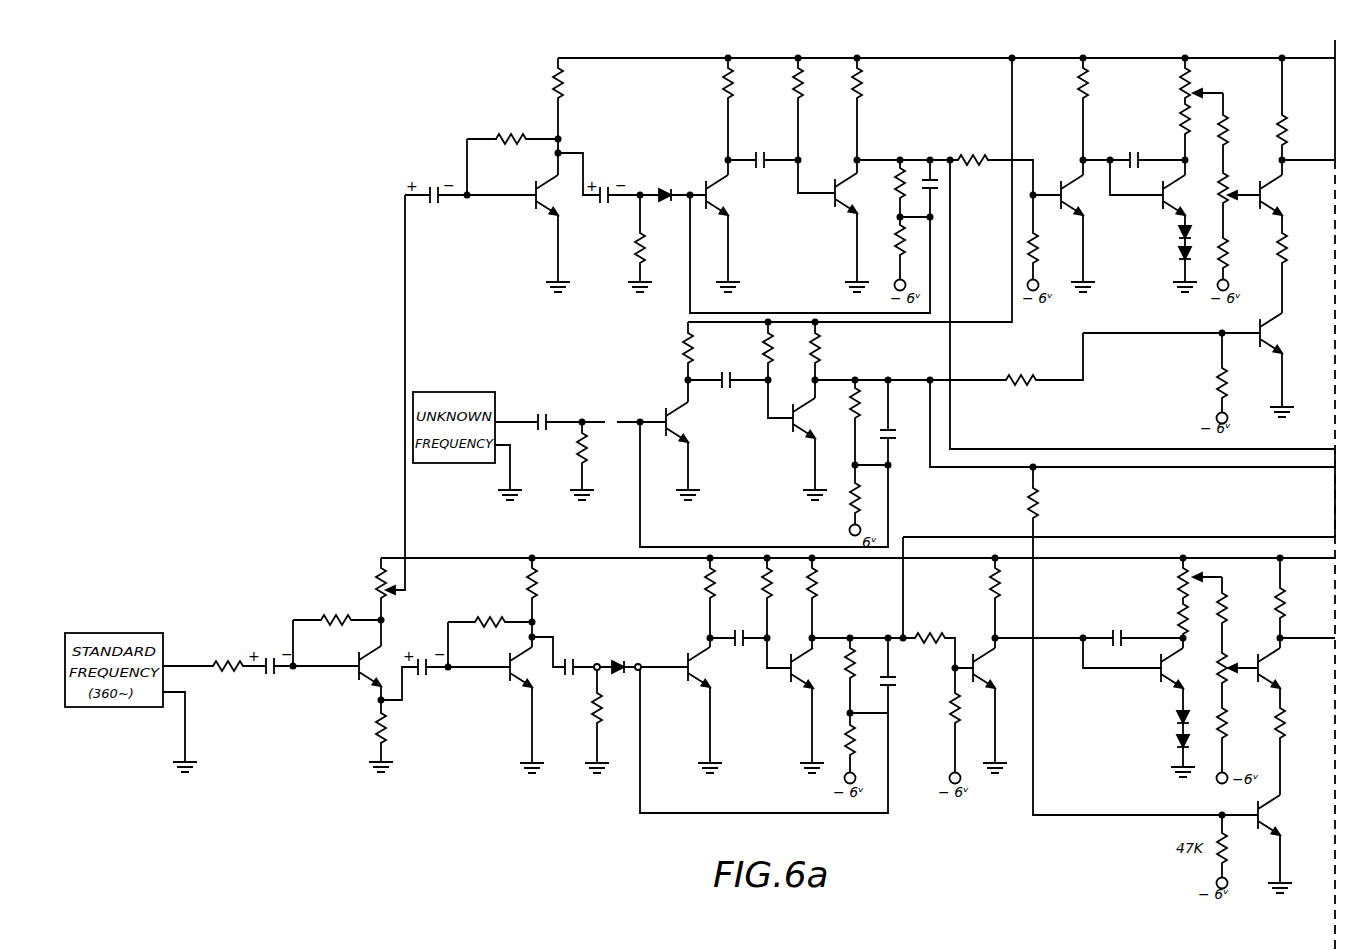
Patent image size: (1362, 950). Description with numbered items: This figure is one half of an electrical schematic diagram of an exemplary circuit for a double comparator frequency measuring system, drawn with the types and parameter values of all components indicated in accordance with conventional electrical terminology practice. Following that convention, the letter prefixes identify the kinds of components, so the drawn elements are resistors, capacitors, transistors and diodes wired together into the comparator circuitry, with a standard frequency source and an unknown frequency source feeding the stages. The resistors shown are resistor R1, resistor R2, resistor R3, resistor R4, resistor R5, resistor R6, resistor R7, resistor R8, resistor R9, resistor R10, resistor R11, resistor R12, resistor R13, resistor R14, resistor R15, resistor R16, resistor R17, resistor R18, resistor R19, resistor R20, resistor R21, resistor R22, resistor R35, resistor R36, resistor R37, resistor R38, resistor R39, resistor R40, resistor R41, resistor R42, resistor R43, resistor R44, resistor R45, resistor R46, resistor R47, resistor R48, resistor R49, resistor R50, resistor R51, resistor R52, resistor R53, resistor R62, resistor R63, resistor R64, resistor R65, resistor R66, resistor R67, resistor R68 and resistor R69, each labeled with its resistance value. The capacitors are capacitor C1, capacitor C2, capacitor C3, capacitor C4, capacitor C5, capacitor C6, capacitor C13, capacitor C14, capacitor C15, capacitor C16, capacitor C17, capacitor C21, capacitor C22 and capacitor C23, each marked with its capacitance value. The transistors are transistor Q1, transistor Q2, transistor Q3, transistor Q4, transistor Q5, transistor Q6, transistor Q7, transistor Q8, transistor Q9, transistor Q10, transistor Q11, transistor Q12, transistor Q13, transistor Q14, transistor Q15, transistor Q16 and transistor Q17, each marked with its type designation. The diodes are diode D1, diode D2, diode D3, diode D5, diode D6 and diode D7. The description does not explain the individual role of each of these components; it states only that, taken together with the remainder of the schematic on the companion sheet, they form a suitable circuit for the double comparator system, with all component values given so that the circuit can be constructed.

The resistor R1 47K R1 is at (224, 648).
The capacitor C1 1 Mfd C1 is at (262, 684).
The transistor Q1 TN56 Q1 is at (349, 678).
The resistor R2 470K R2 is at (326, 604).
The potentiometer R3 5K R3 is at (359, 577).
The resistor R4 2.2K R4 is at (358, 732).
The capacitor C2 1 Mfd C2 is at (426, 685).
The transistor Q2 TN56 Q2 is at (510, 682).
The resistor R5 470K R5 is at (483, 605).
The resistor R6 12K R6 is at (548, 583).
The capacitor C3 1 Mfd C3 is at (577, 648).
The diode D1 is at (621, 657).
The resistor R7 100K R7 is at (615, 707).
The transistor Q3 TN56 Q3 is at (683, 684).
The resistor R8 6.8K R8 is at (688, 583).
The capacitor C4 .001 Mf C4 is at (737, 655).
The resistor R9 290K R9 is at (745, 583).
The transistor Q4 TN56 Q4 is at (783, 685).
The resistor R10 6.8K R10 is at (830, 583).
The resistor R11 220K R11 is at (868, 674).
The capacitor C5 33 Pf C5 is at (907, 673).
The resistor R12 470K R12 is at (868, 741).
The resistor R13 47K R13 is at (930, 618).
The resistor R14 47K R14 is at (936, 713).
The resistor R15 270K R15 is at (972, 583).
The transistor Q5 TN56 Q5 is at (1001, 668).
The capacitor C6 (SPCL) C6 is at (1101, 619).
The potentiometer R16 5K R16 is at (1165, 583).
The resistor R17 1.5K R17 is at (1165, 619).
The transistor Q6 TN56 Q6 is at (1149, 676).
The diode D2 is at (1167, 716).
The diode D3 is at (1167, 741).
The resistor R18 3.9K R18 is at (1240, 606).
The potentiometer R19 100K R19 is at (1206, 668).
The resistor R20 47K R20 is at (1239, 722).
The resistor R21 1.5K R21 is at (1299, 602).
The transistor Q8 TN55 Q8 is at (1289, 668).
The resistor R22 22 ohm R22 is at (1297, 722).
The transistor Q7 TN55 Q7 is at (1289, 814).
The resistor R35 470K R35 is at (506, 123).
The resistor R36 12K R36 is at (576, 83).
The capacitor C13 1 Mfd C13 is at (434, 213).
The transistor Q17 TN56 Q17 is at (530, 206).
The capacitor C14 1 Mfd C14 is at (602, 213).
The diode D5 is at (662, 185).
The resistor R37 100K R37 is at (660, 243).
The resistor R38 6.8K R38 is at (746, 83).
The resistor R39 290K R39 is at (817, 83).
The resistor R40 6.8K R40 is at (875, 83).
The capacitor C15 .001 Mfd C15 is at (761, 141).
The transistor Q16 TN56 Q16 is at (740, 196).
The transistor Q15 TN56 Q15 is at (831, 211).
The resistor R41 220K R41 is at (881, 185).
The resistor R42 470K R42 is at (882, 240).
The capacitor C16 33 Pf C16 is at (955, 195).
The resistor R43 47K R43 is at (973, 141).
The resistor R44 47K R44 is at (1048, 246).
The resistor R45 270K R45 is at (1061, 84).
The transistor Q14 TN56 Q14 is at (1094, 211).
The capacitor C17 (SPCL) C17 is at (1121, 146).
The potentiometer R46 5K R46 is at (1165, 84).
The resistor R47 1.5K R47 is at (1170, 123).
The transistor Q13 TN56 Q13 is at (1192, 198).
The diode D6 is at (1169, 233).
The diode D7 is at (1169, 256).
The resistor R48 3.9K R48 is at (1242, 130).
The potentiometer R49 100K R49 is at (1242, 201).
The resistor R50 47K R50 is at (1238, 251).
The resistor R51 15K R51 is at (1298, 130).
The transistor Q12 TN55 Q12 is at (1291, 195).
The resistor R52 22 ohm R52 is at (1298, 248).
The transistor Q11 TN55 Q11 is at (1290, 333).
The resistor R53 47K R53 is at (1199, 383).
The resistor R68 47K R68 is at (1019, 398).
The resistor R69 47K R69 is at (1051, 499).
The resistor R62 100K R62 is at (559, 456).
The resistor R63 6.8K R63 is at (667, 347).
The resistor R64 290K R64 is at (744, 347).
The resistor R65 6.8K R65 is at (834, 347).
The resistor R66 220K R66 is at (836, 404).
The resistor R67 470K R67 is at (834, 504).
The capacitor C21 1 Mfd C21 is at (542, 401).
The capacitor C22 .001 C22 is at (725, 397).
The capacitor C23 33 Pf C23 is at (904, 434).
The transistor Q9 TN56 Q9 is at (666, 437).
The transistor Q10 TN56 Q10 is at (786, 433).